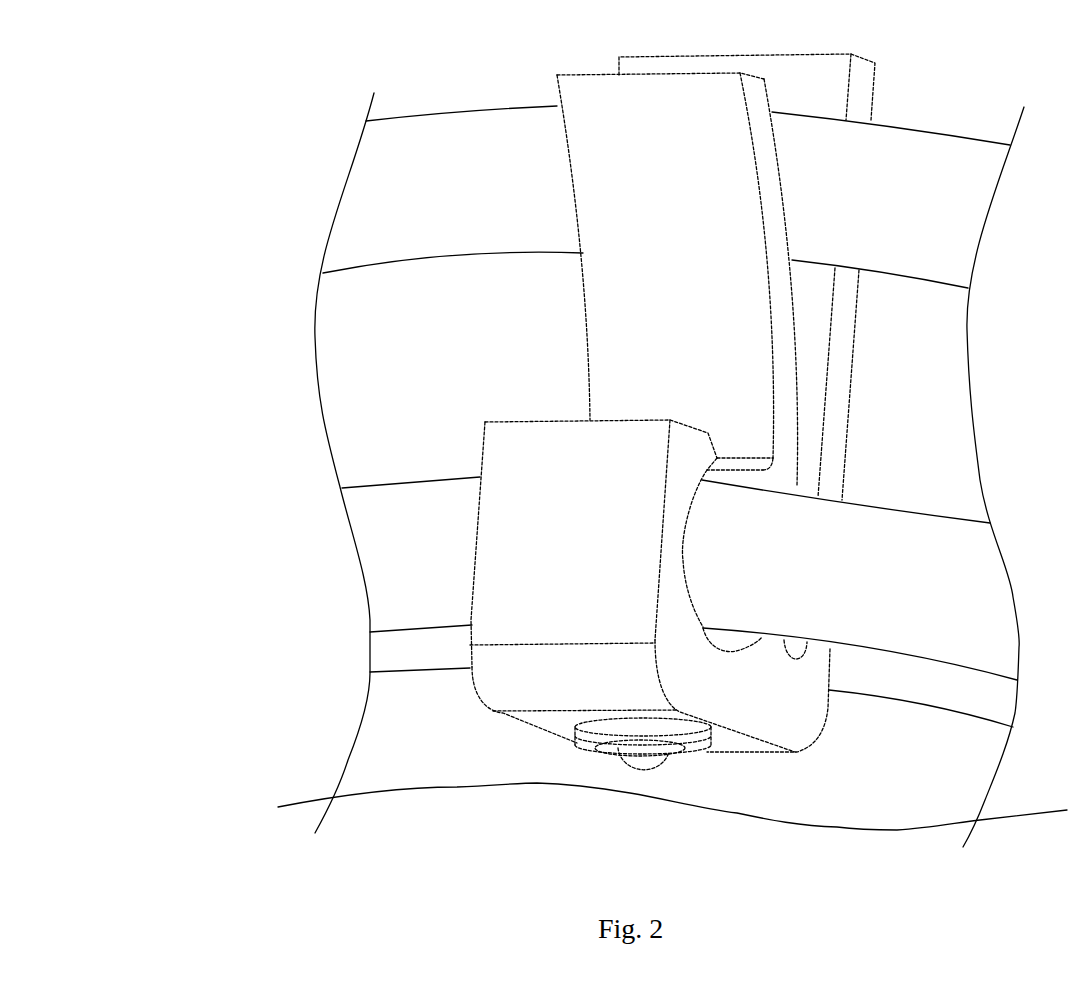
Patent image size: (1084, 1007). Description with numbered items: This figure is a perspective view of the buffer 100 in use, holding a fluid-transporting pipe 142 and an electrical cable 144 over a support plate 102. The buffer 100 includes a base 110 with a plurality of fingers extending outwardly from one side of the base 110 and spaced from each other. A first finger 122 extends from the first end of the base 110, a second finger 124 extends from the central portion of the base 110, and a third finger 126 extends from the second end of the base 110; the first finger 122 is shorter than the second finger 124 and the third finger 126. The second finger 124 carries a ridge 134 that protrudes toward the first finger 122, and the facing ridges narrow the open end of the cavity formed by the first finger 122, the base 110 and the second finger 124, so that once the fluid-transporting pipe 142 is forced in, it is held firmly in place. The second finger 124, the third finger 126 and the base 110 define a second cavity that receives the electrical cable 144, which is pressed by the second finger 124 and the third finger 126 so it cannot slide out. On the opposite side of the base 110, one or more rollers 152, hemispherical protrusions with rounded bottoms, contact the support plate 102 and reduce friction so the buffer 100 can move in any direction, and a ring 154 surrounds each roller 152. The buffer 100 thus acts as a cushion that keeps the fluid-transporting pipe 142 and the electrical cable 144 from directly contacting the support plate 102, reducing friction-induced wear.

The buffer 100 is at (196, 86).
The support plate 102 is at (397, 728).
The base 110 is at (747, 707).
The first finger 122 is at (517, 538).
The second finger 124 is at (570, 88).
The third finger 126 is at (860, 91).
The ridge 134 is at (750, 463).
The fluid-transporting pipe 142 is at (387, 482).
The electrical cable 144 is at (427, 112).
The roller 152 is at (638, 763).
The ring 154 is at (592, 743).